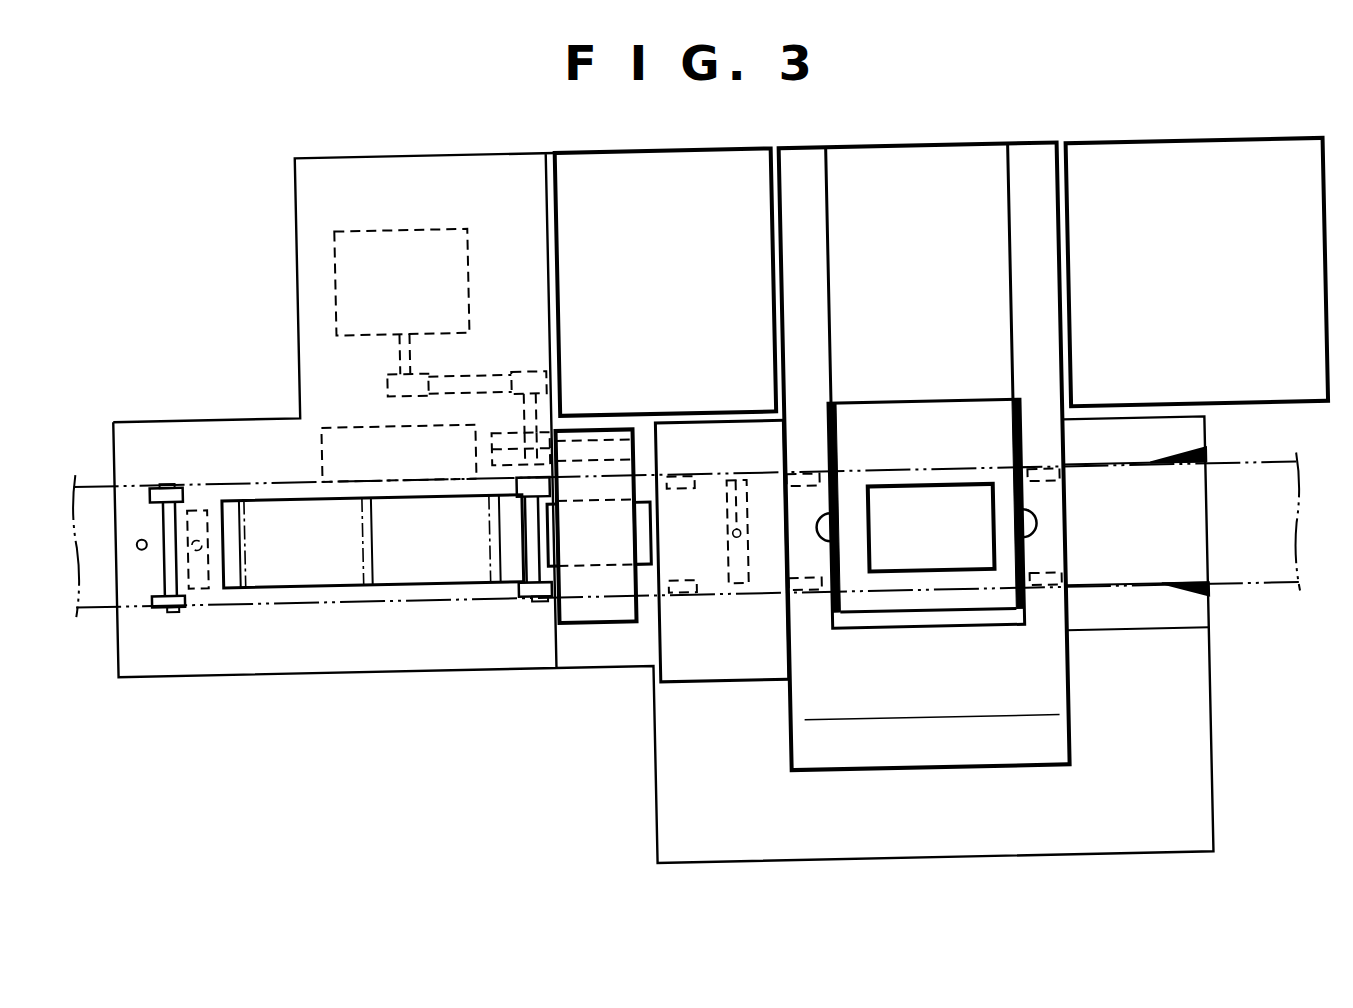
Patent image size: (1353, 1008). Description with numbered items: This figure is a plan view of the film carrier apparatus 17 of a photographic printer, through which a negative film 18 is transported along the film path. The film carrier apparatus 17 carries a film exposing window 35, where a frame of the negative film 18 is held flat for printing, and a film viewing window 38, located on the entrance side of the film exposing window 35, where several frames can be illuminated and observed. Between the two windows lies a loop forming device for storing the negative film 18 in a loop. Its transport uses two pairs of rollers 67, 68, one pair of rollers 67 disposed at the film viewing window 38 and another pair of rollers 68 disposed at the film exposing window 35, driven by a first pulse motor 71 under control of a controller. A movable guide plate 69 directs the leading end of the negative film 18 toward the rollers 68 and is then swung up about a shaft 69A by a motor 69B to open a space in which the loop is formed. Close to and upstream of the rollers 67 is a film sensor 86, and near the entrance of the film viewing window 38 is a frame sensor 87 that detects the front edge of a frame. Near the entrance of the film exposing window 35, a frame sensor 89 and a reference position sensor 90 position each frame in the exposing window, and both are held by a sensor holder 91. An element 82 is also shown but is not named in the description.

The film carrier apparatus 17 is at (754, 874).
The negative film 18 is at (90, 462).
The film exposing window 35 is at (900, 494).
The film viewing window 38 is at (285, 579).
The rollers 67 is at (155, 596).
The rollers 68 is at (1047, 592).
The movable guide plate 69 is at (594, 563).
The shaft 69A is at (593, 436).
The motor 69B is at (350, 408).
The first pulse motor 71 is at (360, 223).
The sensor 82 is at (204, 580).
The film sensor 86 is at (140, 524).
The frame sensor 87 is at (208, 522).
The frame sensor 89 is at (747, 561).
The reference position sensor 90 is at (737, 481).
The sensor holder 91 is at (722, 682).